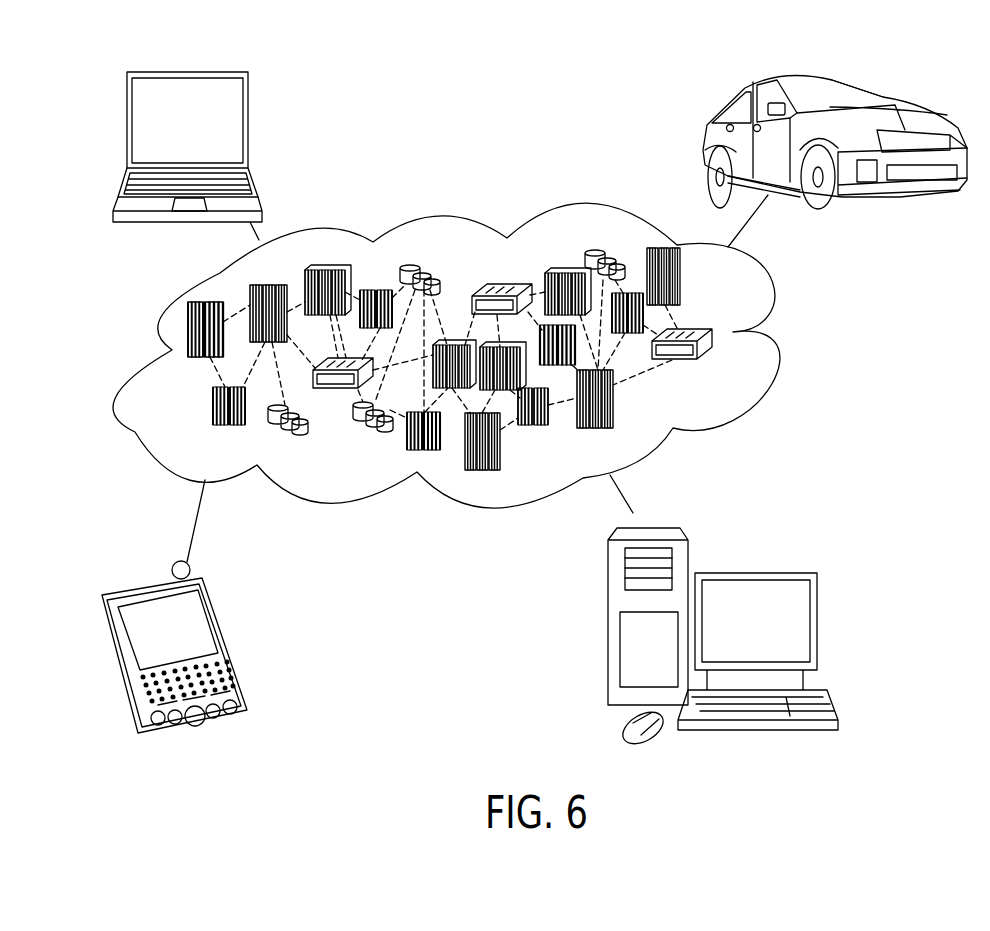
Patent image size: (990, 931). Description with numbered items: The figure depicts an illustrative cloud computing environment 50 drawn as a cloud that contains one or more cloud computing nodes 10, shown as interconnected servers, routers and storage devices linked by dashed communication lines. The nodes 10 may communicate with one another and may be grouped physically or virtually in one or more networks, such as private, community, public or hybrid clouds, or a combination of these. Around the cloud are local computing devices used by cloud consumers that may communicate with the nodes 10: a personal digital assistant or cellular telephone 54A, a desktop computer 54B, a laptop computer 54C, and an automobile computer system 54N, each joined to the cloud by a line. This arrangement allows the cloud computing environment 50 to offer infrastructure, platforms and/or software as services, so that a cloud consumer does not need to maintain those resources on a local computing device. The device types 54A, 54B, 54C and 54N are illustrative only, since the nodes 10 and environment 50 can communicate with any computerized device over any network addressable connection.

The cloud computing node 10 is at (723, 382).
The cloud computing environment 50 is at (773, 287).
The personal digital assistant (PDA) or cellular telephone 54A is at (220, 623).
The desktop computer 54B is at (817, 620).
The laptop computer 54C is at (248, 125).
The automobile computer system 54N is at (885, 97).